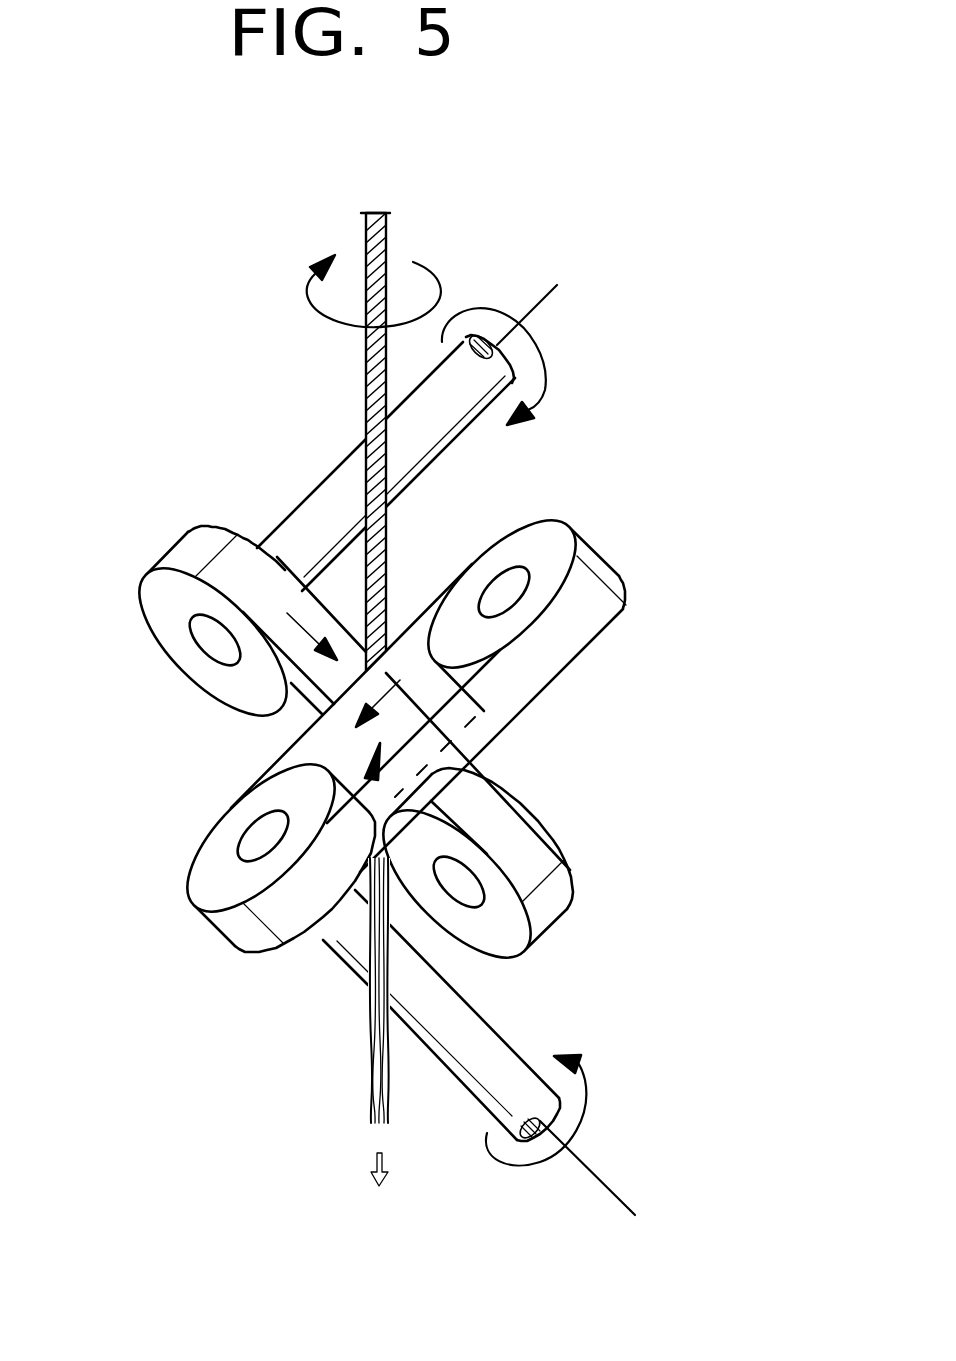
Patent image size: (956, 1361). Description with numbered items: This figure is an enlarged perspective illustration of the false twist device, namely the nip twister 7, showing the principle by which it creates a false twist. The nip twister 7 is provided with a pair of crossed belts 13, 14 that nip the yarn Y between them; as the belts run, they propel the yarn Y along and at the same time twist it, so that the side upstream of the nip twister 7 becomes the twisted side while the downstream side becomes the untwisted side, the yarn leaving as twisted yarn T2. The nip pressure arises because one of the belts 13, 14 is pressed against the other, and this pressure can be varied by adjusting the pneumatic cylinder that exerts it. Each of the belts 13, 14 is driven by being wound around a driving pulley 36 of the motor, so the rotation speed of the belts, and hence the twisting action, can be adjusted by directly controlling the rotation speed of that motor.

The nip twister 7 is at (607, 748).
The belt 13 is at (248, 936).
The belt 14 is at (202, 556).
The driving pulley 36 is at (165, 600).
The yarn Y is at (367, 378).
The twisted yarn T2 is at (365, 1092).